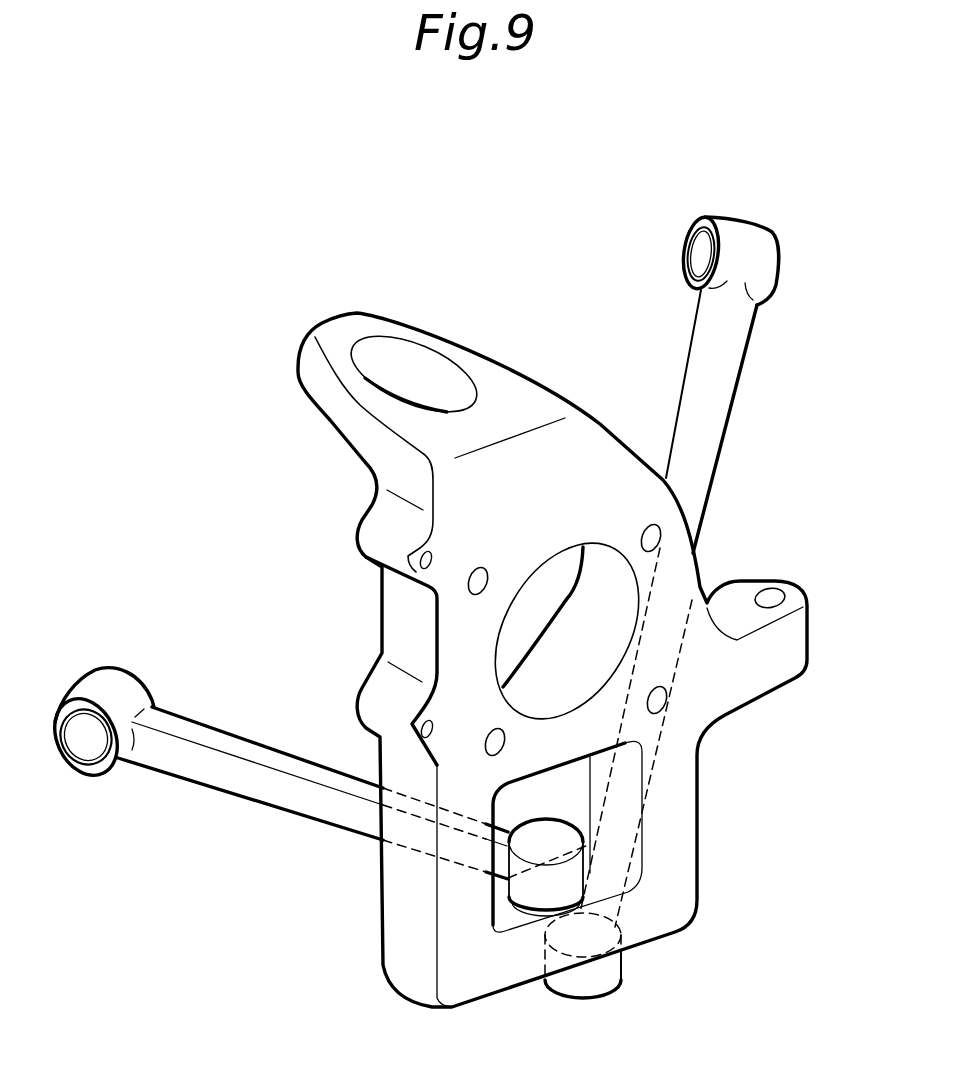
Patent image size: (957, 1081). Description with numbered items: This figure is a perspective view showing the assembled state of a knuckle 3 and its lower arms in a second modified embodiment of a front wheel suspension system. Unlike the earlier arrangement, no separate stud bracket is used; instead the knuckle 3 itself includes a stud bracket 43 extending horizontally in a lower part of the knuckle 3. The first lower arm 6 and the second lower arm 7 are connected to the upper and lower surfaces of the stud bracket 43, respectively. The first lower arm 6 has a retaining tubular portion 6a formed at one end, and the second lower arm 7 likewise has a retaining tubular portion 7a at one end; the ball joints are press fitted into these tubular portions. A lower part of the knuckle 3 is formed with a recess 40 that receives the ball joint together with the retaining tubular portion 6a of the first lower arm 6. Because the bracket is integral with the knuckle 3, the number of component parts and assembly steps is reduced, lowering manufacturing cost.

The knuckle 3 is at (362, 510).
The first lower arm 6 is at (240, 790).
The retaining tubular portion 6a is at (533, 893).
The second lower arm 7 is at (720, 397).
The retaining tubular portion 7a is at (603, 988).
The recess 40 is at (563, 802).
The stud bracket 43 is at (628, 925).